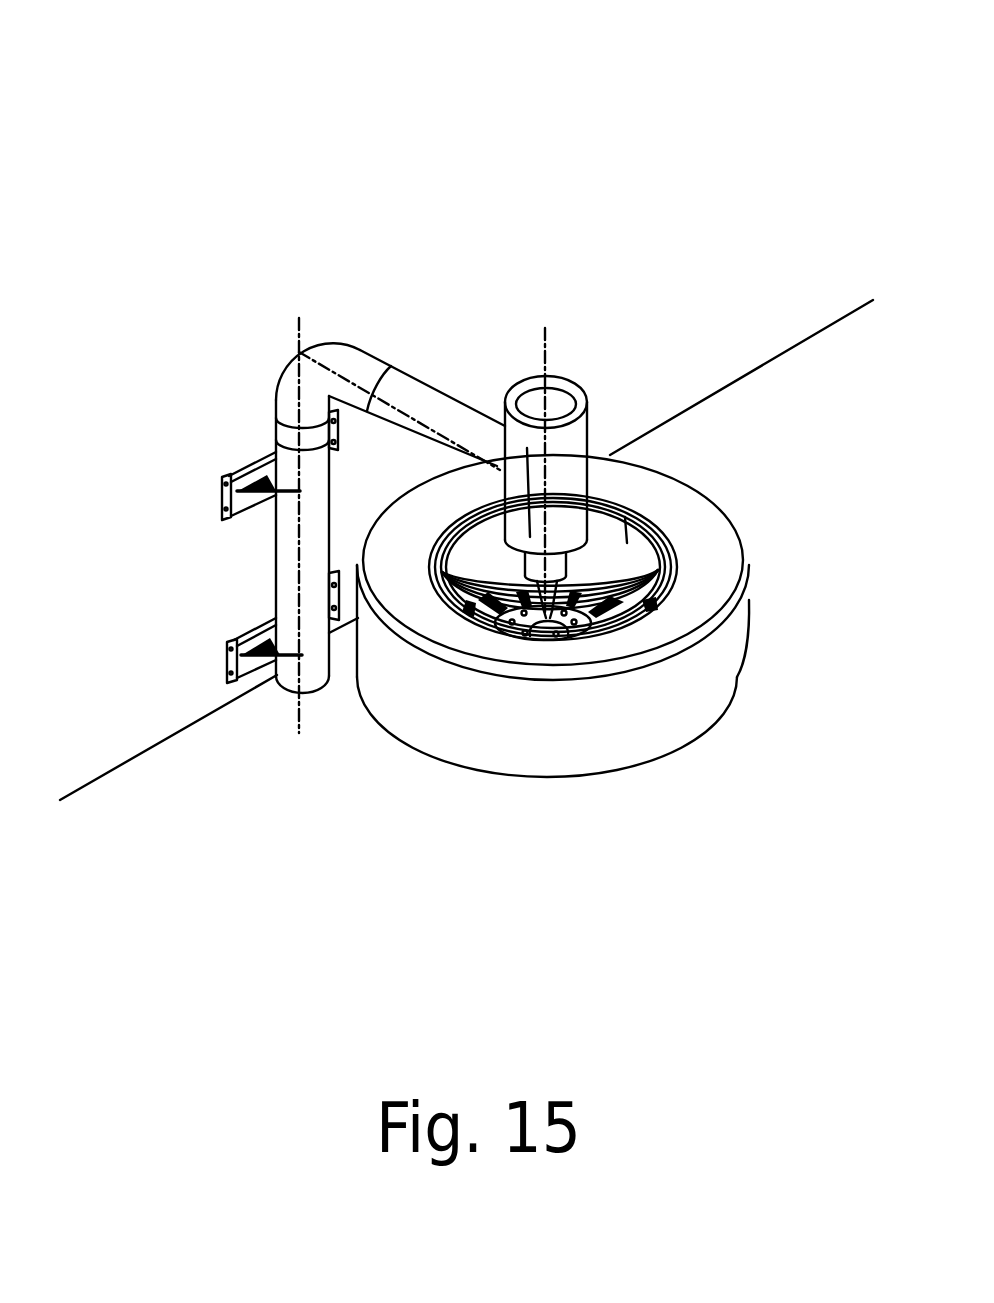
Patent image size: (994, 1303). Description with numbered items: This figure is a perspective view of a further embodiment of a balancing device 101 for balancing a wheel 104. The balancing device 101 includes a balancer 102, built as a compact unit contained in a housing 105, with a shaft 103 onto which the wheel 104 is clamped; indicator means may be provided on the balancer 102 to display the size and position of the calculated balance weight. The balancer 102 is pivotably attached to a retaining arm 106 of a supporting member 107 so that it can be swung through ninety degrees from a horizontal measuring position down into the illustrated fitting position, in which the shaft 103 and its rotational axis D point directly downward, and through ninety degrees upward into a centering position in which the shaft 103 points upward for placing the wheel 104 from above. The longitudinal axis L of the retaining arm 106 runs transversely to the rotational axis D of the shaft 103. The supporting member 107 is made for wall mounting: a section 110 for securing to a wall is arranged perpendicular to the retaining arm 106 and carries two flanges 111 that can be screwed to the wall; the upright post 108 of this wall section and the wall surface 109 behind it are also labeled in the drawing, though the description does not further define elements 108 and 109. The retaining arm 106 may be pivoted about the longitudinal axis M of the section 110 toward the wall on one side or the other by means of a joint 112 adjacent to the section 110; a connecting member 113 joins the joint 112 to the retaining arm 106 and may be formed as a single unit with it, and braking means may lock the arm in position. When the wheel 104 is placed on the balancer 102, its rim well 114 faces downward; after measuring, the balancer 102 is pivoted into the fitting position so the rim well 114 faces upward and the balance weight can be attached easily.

The balancing device 101 is at (557, 280).
The balancer 102 is at (608, 414).
The shaft 103 is at (655, 572).
The wheel 104 is at (677, 723).
The housing 105 is at (512, 445).
The retaining arm 106 is at (440, 416).
The supporting member 107 is at (233, 424).
The vertical post 108 is at (430, 565).
The wall 109 is at (232, 546).
The section designed for securing to a wall 110 is at (277, 600).
The flanges 111 is at (222, 507).
The joint 112 is at (277, 336).
The connecting member 113 is at (298, 351).
The rim well 114 is at (627, 500).
The longitudinal axis of the retaining arm L is at (387, 401).
The longitudinal axis of the wall section M is at (299, 708).
The rotational axis of the shaft D is at (545, 357).